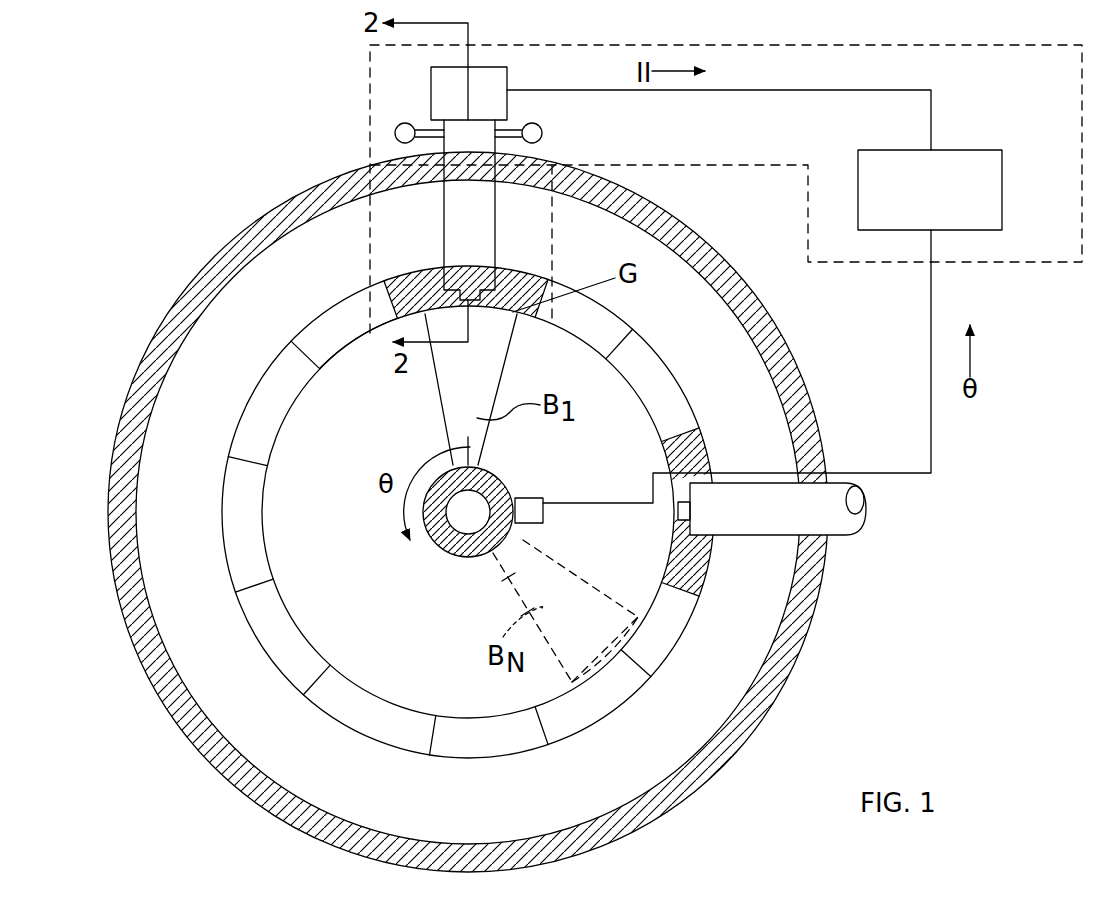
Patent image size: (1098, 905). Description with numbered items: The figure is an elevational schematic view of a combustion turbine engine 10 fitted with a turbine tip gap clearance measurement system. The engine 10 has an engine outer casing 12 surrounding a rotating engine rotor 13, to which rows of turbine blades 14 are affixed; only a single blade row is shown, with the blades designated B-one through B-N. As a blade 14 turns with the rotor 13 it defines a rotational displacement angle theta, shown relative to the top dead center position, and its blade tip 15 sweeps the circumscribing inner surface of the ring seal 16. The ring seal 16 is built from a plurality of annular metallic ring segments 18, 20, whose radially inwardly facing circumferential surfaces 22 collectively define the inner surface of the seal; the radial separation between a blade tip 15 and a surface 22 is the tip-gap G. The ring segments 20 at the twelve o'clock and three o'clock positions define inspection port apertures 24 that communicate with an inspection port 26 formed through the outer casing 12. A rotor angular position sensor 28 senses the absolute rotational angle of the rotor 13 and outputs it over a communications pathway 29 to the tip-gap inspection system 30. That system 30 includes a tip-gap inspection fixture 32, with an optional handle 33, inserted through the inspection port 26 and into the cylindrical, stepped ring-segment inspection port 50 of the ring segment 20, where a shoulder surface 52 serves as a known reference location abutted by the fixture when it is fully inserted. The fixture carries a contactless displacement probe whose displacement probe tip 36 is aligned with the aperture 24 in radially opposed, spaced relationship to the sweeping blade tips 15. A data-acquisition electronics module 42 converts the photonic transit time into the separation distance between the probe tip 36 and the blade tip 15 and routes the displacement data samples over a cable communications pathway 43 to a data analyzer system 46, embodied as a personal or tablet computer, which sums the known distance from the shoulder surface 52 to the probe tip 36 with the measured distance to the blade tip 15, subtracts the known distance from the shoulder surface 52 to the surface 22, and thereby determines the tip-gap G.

The combustion turbine engine 10 is at (217, 138).
The engine outer casing 12 is at (714, 226).
The engine rotor 13 is at (440, 542).
The turbine blade 14 is at (453, 402).
The blade tip 15 is at (430, 316).
The ring seal 16 is at (460, 512).
The ring segment 18 is at (242, 557).
The ring segment 20 is at (520, 277).
The inwardly facing circumferential surface 22 is at (660, 428).
The inspection port aperture 24 is at (680, 506).
The inspection port 26 is at (822, 536).
The rotor angular position sensor 28 is at (532, 502).
The communications pathway 29 is at (935, 437).
The tip-gap inspection system 30 is at (365, 102).
The tip-gap inspection fixture 32 is at (462, 215).
The handle 33 is at (545, 133).
The displacement probe tip 36 is at (482, 318).
The data-acquisition electronics module 42 is at (480, 88).
The communications pathway (cable) 43 is at (820, 92).
The data analyzer system 46 is at (1003, 160).
The ring-segment inspection port 50 is at (484, 276).
The shoulder surface 52 is at (738, 530).